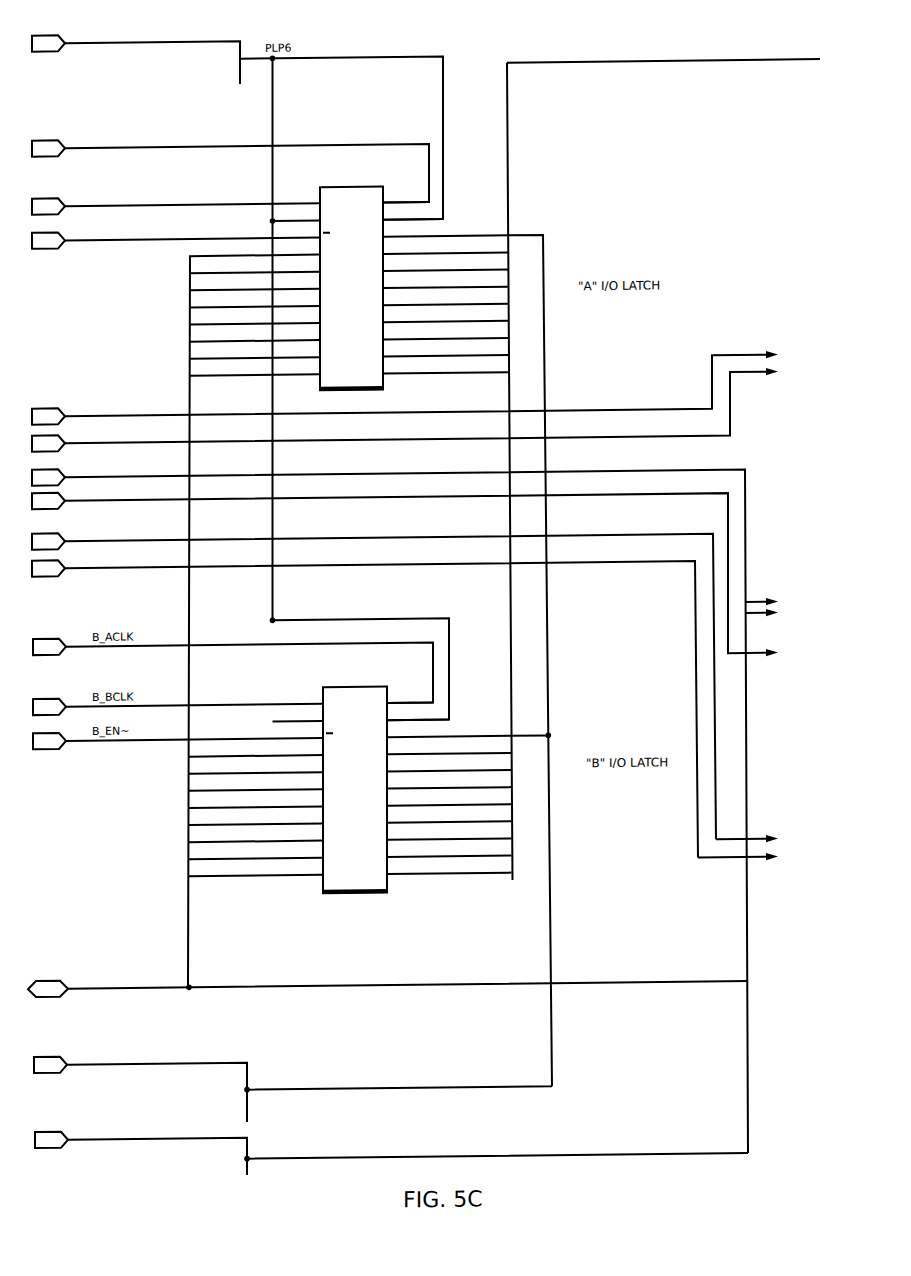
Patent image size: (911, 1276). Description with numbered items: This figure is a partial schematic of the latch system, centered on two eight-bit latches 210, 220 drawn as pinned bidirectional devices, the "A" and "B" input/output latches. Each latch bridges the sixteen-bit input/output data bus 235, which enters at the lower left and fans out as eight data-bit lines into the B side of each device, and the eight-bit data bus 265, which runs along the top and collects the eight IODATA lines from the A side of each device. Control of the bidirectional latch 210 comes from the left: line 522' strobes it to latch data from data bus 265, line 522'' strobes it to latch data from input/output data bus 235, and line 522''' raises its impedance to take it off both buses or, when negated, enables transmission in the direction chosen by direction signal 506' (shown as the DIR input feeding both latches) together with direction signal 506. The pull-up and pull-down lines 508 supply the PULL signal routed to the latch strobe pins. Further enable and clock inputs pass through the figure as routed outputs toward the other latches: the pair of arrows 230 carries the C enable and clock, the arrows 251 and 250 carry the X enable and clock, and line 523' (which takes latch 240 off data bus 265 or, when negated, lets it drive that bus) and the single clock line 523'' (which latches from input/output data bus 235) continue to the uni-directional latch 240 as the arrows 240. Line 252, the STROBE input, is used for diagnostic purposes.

The pull-up and pull-down lines 508 is at (136, 43).
The strobe line 522' is at (230, 155).
The strobe line 522'' is at (176, 191).
The impedance control line 522''' is at (176, 230).
The eight-bit latch 210 is at (385, 397).
The eight-bit latch 220 is at (376, 898).
The data bus 265 is at (601, 458).
The eight-bit latch 230 is at (424, 400).
The X_EN~ output line 251 is at (424, 808).
The eight-bit latch 250 is at (424, 575).
The output enable line 523' is at (374, 673).
The clock line 523'' is at (365, 705).
The eight-bit latch 240 is at (757, 847).
The input/output data bus 235 is at (388, 617).
The direction signal 506 is at (140, 1082).
The direction signal 506' is at (398, 658).
The diagnostic line 252 is at (391, 1142).